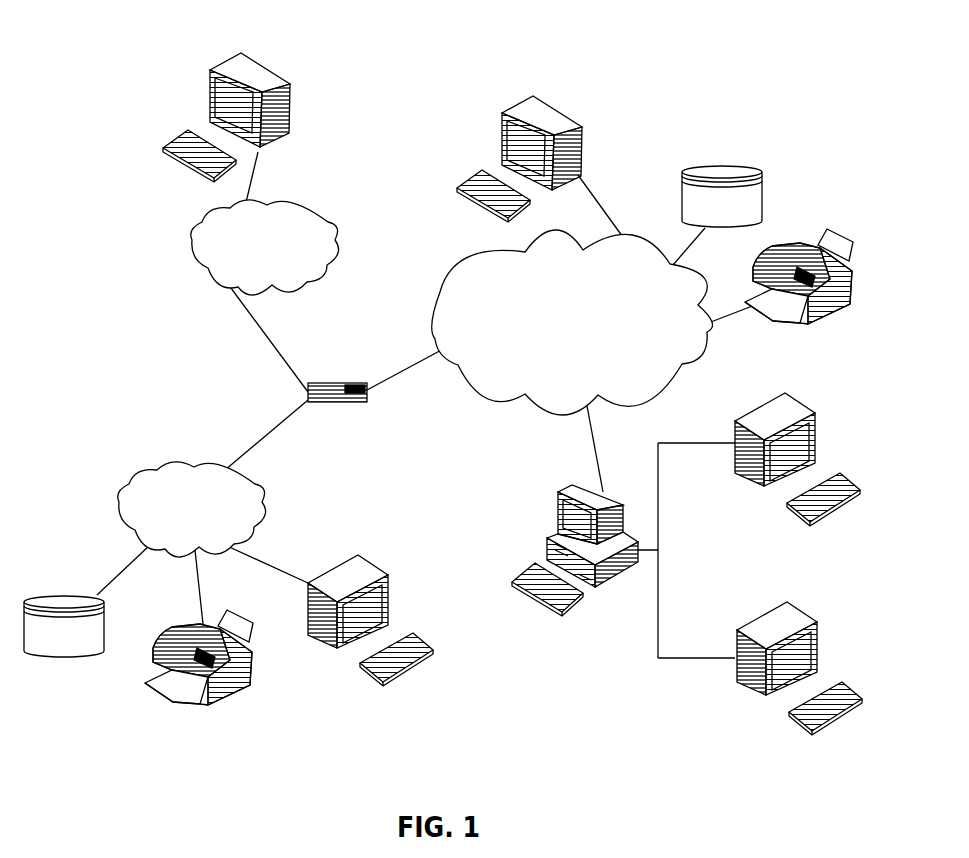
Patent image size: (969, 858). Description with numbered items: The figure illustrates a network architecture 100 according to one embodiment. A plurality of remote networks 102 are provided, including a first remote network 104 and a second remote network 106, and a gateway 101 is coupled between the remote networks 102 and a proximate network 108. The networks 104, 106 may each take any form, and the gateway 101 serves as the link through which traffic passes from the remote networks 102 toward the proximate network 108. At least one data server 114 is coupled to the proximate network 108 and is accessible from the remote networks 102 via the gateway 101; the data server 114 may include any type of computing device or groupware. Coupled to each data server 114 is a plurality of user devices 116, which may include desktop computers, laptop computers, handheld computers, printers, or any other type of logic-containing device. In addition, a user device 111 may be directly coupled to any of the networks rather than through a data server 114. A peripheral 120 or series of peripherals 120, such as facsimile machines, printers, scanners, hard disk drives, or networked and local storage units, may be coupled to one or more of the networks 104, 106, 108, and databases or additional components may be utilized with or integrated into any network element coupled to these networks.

The network architecture 100 is at (148, 40).
The gateway 101 is at (320, 383).
The remote networks 102 is at (177, 302).
The first remote network 104 is at (118, 488).
The second remote network 106 is at (330, 221).
The proximate network 108 is at (670, 383).
The user device 111 is at (583, 124).
The data server 114 is at (557, 505).
The user devices 116 is at (289, 92).
The peripheral 120 is at (762, 172).